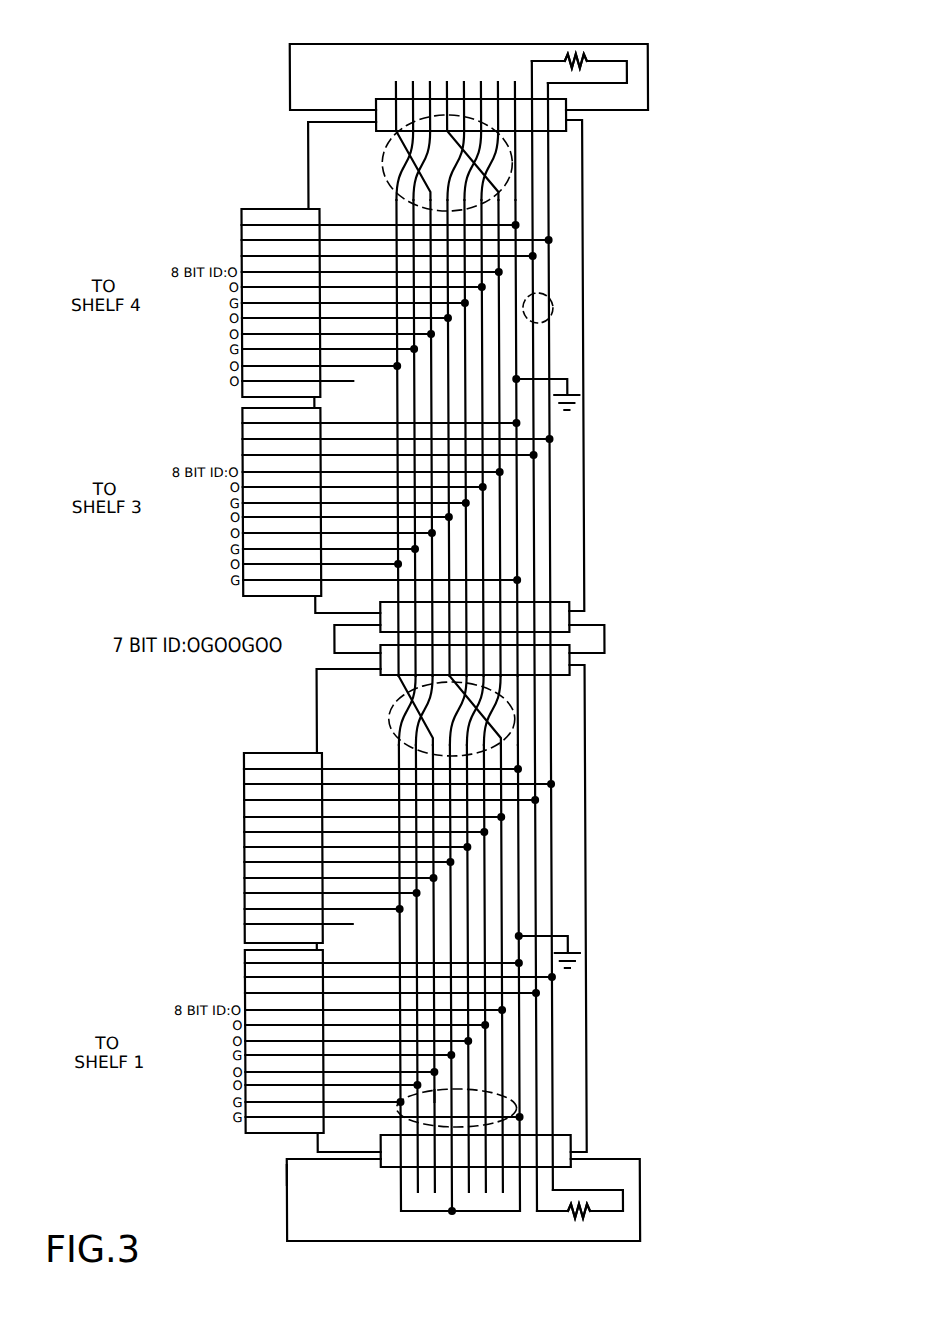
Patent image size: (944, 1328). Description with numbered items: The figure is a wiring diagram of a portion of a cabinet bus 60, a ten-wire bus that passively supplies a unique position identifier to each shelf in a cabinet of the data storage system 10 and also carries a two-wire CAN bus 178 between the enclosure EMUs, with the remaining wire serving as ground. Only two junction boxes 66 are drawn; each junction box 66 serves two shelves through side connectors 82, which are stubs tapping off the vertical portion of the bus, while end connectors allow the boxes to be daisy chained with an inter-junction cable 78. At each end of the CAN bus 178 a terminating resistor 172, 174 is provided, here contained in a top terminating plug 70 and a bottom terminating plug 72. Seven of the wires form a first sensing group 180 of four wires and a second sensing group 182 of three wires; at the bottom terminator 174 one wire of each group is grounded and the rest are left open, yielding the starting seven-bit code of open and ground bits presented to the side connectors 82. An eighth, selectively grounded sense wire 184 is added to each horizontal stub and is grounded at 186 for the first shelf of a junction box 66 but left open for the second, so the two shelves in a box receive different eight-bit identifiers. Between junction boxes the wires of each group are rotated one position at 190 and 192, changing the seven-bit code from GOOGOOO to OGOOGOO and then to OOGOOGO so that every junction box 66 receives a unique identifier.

The data storage system 10 is at (565, 636).
The cabinet bus 60 is at (184, 168).
The junction box 66 is at (582, 523).
The terminating plug 70 is at (648, 88).
The terminating plug 72 is at (635, 1225).
The inter-junction cable 78 is at (602, 638).
The side connector 82 is at (392, 677).
The terminating resistor 172 is at (588, 58).
The terminating resistor 174 is at (587, 1216).
The CAN bus 178 is at (553, 308).
The first sensing group of wires 180 is at (512, 1097).
The second sensing group of wires 182 is at (433, 1100).
The selectively grounded sense wire 184 is at (256, 924).
The ground point of sense wire 186 is at (282, 1173).
The wire rotation or cross-over 190 is at (550, 730).
The wire rotation or cross-over 192 is at (513, 162).